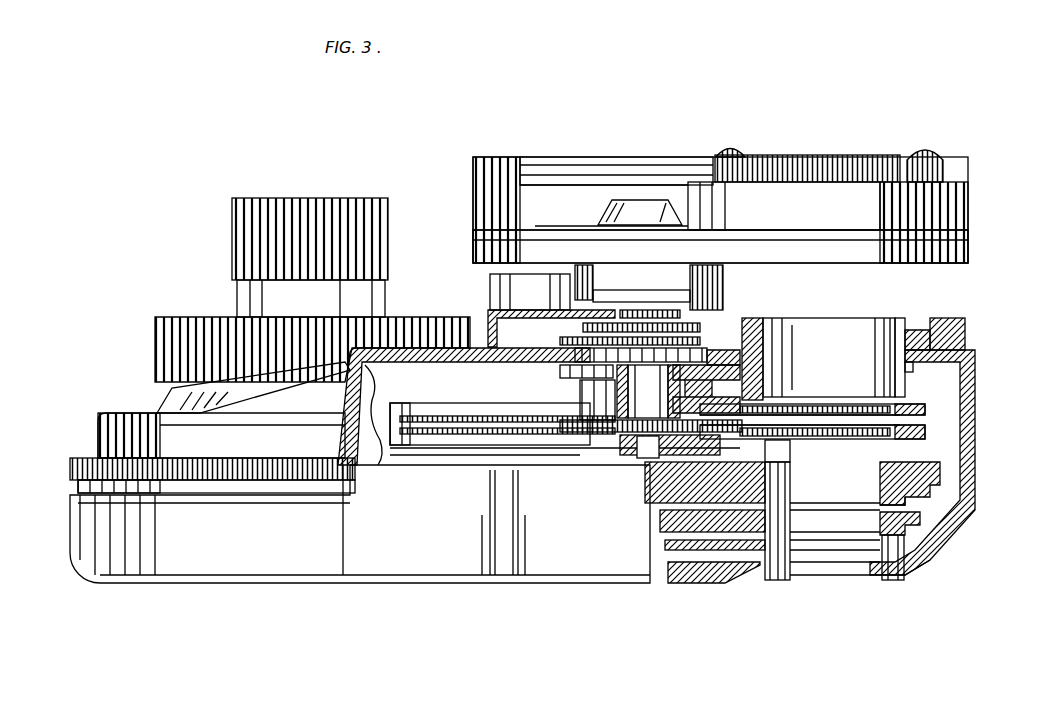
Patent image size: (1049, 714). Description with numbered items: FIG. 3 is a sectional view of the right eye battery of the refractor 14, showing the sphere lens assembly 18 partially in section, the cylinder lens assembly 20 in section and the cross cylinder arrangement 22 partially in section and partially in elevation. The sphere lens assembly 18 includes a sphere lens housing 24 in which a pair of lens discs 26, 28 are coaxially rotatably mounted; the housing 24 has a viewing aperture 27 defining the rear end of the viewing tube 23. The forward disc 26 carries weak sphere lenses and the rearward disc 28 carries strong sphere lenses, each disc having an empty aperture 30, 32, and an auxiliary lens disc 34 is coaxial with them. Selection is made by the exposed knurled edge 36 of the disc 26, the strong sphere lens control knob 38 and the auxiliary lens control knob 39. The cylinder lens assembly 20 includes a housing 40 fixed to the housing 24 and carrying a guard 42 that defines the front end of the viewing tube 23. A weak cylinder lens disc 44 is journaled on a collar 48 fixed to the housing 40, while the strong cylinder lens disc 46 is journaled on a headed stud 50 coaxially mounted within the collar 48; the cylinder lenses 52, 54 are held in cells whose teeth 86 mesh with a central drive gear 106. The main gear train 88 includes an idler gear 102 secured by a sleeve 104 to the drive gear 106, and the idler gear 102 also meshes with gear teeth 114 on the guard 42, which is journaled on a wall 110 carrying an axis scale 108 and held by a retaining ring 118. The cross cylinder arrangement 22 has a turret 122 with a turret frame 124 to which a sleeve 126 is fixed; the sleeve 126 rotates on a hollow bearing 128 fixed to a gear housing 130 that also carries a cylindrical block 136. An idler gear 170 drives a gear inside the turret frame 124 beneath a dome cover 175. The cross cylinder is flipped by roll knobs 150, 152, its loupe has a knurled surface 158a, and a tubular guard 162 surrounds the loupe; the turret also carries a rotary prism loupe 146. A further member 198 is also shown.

The camera apparatus 14 is at (185, 185).
The cross cylinder arrangement 22 is at (766, 114).
The rotary prism loupe 146 is at (494, 157).
The dome cover 175 is at (636, 204).
The roll knob 152 is at (732, 148).
The knurled surface 158a is at (867, 156).
The roll knob 150 is at (925, 148).
The tubular guard 162 is at (968, 200).
The turret 122 is at (978, 225).
The turret frame 124 is at (968, 250).
The member 198 is at (578, 283).
The cylindrical block 136 is at (490, 290).
The gear housing 130 is at (488, 322).
The sleeve 126 is at (722, 284).
The hollow bearing 128 is at (715, 299).
The idler gear 170 is at (583, 327).
The idler gear 102 is at (590, 329).
The auxiliary lens control knob 39 is at (232, 236).
The strong sphere lens control knob 38 is at (155, 330).
The housing 40 is at (980, 395).
The collar 48 is at (560, 371).
The wall 110 is at (972, 352).
The knurled edge 36 is at (70, 468).
The sphere lens housing 24 is at (292, 570).
The cylinder lens assembly 20 is at (478, 400).
The teeth 86 is at (410, 412).
The main gear train 88 is at (600, 410).
The sleeve 104 is at (648, 391).
The drive gear 106 is at (620, 440).
The headed stud 50 is at (648, 450).
The cylinder lens 54 is at (826, 404).
The viewing tube 23 is at (855, 330).
The guard 42 is at (896, 330).
The gear teeth 114 is at (945, 328).
The axis scale 108 is at (962, 318).
The retaining ring 118 is at (925, 379).
The weak cylinder lens disc 44 is at (925, 410).
The strong cylinder lens disc 46 is at (925, 435).
The cylinder lens 52 is at (848, 440).
The empty aperture 30 is at (945, 480).
The sphere lens disc 26 is at (945, 491).
The sphere lens disc 28 is at (920, 548).
The sphere lens assembly 18 is at (950, 525).
The auxiliary lens disc 34 is at (682, 572).
The viewing aperture 27 is at (776, 580).
The empty aperture 32 is at (883, 540).